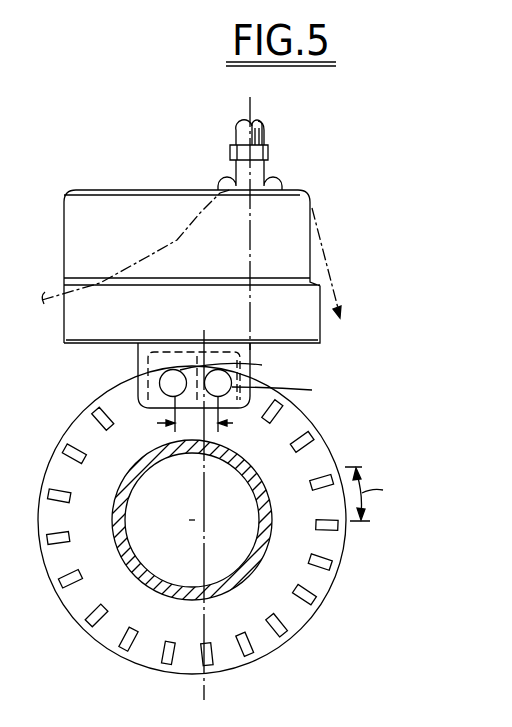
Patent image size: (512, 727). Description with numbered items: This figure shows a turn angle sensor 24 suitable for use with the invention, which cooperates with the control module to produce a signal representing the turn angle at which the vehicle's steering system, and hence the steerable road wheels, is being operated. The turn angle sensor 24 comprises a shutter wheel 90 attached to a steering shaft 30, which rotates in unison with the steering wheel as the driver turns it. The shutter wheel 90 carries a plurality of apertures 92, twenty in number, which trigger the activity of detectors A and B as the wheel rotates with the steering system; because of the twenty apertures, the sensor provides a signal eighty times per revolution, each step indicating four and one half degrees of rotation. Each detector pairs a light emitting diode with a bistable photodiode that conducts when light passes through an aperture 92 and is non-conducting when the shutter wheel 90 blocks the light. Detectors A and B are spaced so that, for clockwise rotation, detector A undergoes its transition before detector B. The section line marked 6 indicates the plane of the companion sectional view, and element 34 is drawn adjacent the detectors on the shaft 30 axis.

The section line 6- 6 is at (193, 107).
The turn angle sensor 24 is at (373, 253).
The steering shaft 30 is at (232, 592).
The detector assembly 34 is at (160, 381).
The shutter wheel 90 is at (308, 617).
The apertures 92 is at (322, 575).